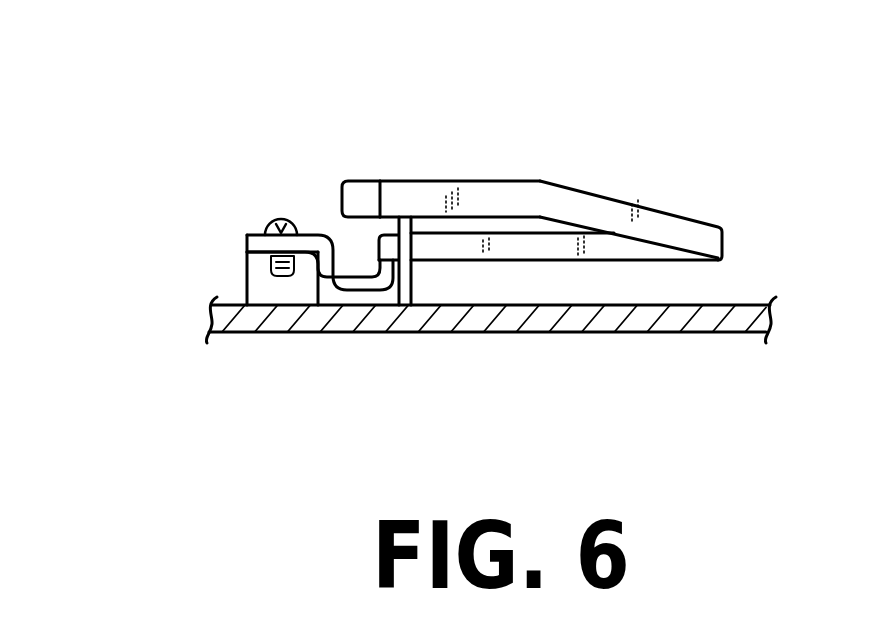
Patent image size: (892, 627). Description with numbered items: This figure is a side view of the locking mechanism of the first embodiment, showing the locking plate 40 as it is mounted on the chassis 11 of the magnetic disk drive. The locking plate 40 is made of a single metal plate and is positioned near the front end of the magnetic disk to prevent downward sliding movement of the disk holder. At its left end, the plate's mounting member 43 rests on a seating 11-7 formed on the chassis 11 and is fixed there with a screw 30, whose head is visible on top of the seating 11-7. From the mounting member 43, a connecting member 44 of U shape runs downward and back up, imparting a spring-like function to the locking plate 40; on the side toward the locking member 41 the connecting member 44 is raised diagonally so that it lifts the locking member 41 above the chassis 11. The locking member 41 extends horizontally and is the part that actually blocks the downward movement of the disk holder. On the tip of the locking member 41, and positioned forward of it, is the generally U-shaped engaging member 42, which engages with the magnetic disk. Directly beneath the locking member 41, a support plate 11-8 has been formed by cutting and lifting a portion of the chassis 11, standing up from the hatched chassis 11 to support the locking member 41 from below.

The chassis 11 is at (725, 298).
The seating 11-7 is at (253, 282).
The support plate 11-8 is at (411, 275).
The screw 30 is at (273, 226).
The locking plate 40 is at (612, 182).
The locking member 41 is at (508, 185).
The engaging member 42 is at (368, 185).
The mounting member 43 is at (310, 233).
The connecting member 44 is at (678, 211).